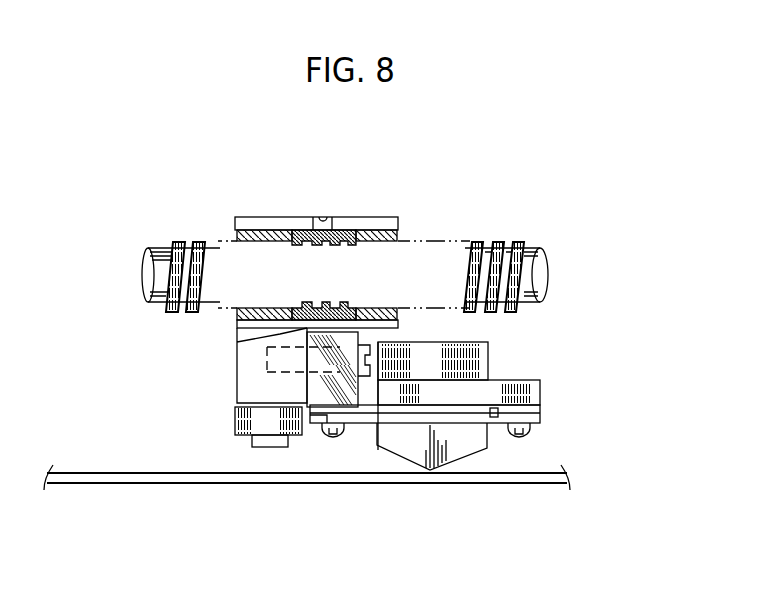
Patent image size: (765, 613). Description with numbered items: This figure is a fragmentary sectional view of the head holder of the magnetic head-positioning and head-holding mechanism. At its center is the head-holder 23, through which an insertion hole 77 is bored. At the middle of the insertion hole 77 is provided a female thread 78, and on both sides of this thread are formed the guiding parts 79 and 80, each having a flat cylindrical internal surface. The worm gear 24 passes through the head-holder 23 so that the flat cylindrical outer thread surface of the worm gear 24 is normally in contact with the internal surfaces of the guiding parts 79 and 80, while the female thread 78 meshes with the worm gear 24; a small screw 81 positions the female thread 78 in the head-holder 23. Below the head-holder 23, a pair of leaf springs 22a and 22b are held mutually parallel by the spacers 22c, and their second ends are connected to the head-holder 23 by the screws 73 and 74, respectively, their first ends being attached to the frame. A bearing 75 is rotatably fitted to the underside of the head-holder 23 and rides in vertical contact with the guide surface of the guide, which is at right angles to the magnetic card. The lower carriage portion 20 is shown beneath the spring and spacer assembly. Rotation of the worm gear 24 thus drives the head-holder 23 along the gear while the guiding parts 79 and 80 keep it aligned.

The carriage 20 is at (428, 447).
The leaf spring 22a is at (478, 420).
The leaf spring 22b is at (463, 458).
The spacers 22c is at (542, 407).
The head-holder 23 is at (378, 215).
The worm gear 24 is at (500, 240).
The screw 73 is at (518, 440).
The screw 74 is at (333, 440).
The bearing 75 is at (252, 421).
The insertion hole 77 is at (236, 232).
The female thread 78 is at (338, 238).
The guiding part 79 is at (281, 230).
The guiding part 80 is at (400, 232).
The small screw 81 is at (320, 215).